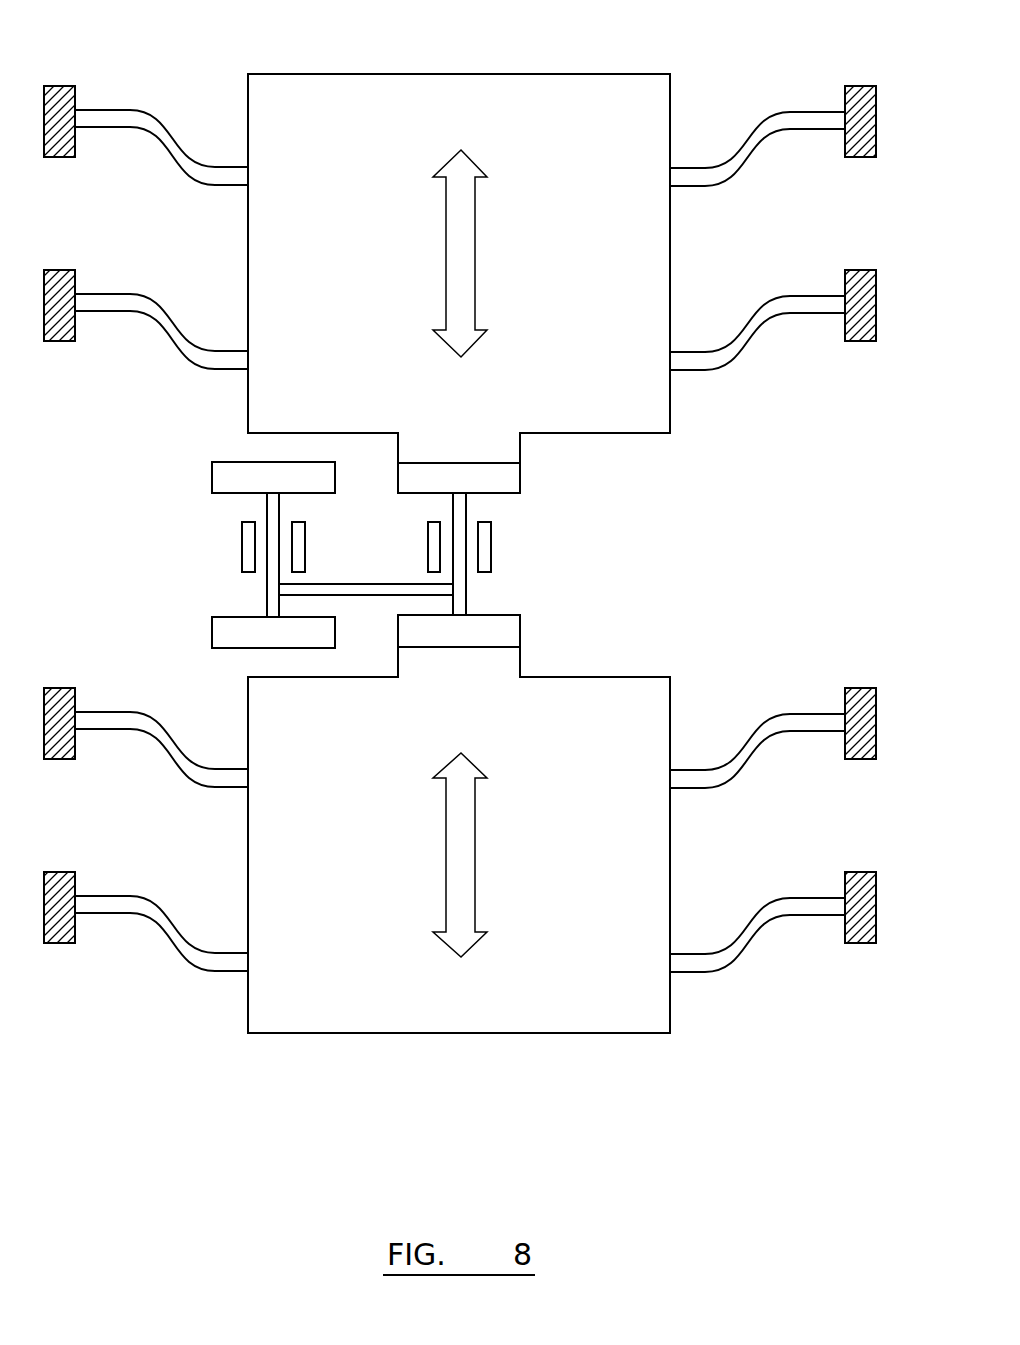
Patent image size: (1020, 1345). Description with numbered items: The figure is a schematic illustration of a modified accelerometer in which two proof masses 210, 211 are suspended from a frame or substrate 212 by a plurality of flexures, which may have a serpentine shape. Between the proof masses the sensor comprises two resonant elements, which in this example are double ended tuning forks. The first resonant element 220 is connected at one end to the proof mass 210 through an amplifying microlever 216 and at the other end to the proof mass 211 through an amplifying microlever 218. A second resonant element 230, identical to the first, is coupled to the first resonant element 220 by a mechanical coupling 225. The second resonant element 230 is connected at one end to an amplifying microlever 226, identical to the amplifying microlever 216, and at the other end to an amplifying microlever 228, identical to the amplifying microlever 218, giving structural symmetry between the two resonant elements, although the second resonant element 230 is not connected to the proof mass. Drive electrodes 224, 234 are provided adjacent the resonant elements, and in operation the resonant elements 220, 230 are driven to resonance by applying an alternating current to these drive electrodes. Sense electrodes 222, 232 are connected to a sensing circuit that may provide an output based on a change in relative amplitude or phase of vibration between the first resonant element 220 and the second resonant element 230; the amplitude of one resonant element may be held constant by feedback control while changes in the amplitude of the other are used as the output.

The proof mass 210 is at (648, 996).
The proof mass 211 is at (650, 394).
The frame or substrate 212 is at (57, 95).
The amplifying microlever 216 is at (505, 630).
The amplifying microlever 218 is at (507, 480).
The first resonant element 220 is at (462, 598).
The sense electrode 222 is at (431, 538).
The drive electrode 224 is at (487, 545).
The mechanical coupling 225 is at (396, 590).
The amplifying microlever 226 is at (228, 630).
The amplifying microlever 228 is at (228, 481).
The second resonant element 230 is at (272, 600).
The sense electrode 232 is at (246, 545).
The drive electrode 234 is at (300, 555).